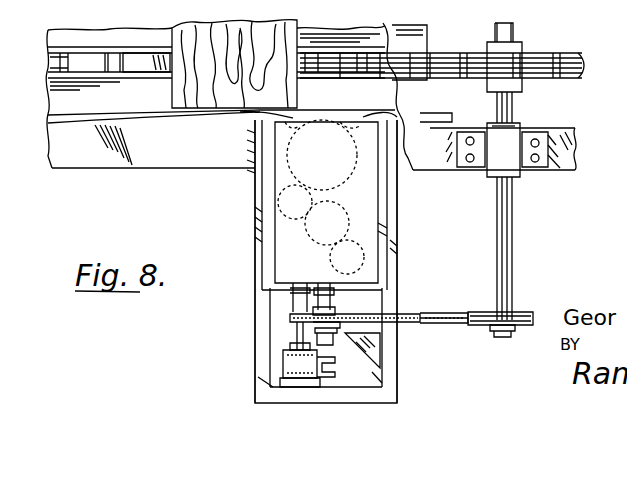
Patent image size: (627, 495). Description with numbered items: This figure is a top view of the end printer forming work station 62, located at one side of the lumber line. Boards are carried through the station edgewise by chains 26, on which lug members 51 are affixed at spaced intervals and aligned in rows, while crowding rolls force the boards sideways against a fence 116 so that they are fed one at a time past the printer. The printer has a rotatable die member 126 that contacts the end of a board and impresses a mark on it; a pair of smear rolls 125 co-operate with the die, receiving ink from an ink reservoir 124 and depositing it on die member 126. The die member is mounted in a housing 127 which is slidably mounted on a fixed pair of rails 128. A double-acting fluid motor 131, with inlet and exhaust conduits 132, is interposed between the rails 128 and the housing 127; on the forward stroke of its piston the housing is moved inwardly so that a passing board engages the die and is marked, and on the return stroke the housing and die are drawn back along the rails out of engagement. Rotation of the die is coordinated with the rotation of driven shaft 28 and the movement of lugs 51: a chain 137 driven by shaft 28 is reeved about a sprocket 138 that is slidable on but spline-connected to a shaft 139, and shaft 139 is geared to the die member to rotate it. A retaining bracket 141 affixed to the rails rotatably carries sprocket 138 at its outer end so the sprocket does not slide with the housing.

The chains 26 is at (460, 52).
The lug members 51 is at (150, 66).
The fence 116 is at (160, 117).
The rotatable die member 126 is at (277, 182).
The ink reservoir 124 is at (350, 213).
The smear rolls 125 is at (320, 253).
The work station 62 is at (361, 257).
The housing 127 is at (387, 262).
The rails 128 is at (253, 308).
The driven shaft 28 is at (504, 290).
The shaft 139 is at (328, 288).
The sprocket 138 is at (293, 322).
The double-acting fluid motor 131 is at (283, 358).
The inlet and exhaust conduits 132 is at (322, 360).
The chain 137 is at (407, 318).
The retaining bracket 141 is at (370, 347).